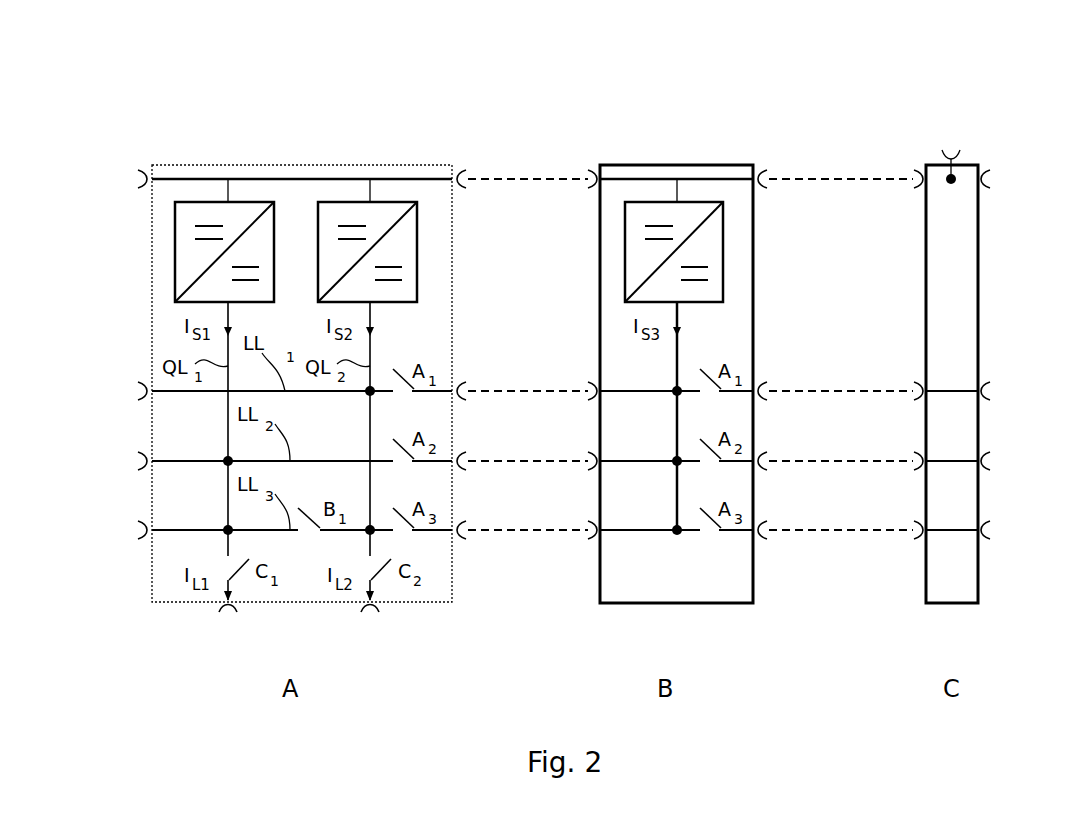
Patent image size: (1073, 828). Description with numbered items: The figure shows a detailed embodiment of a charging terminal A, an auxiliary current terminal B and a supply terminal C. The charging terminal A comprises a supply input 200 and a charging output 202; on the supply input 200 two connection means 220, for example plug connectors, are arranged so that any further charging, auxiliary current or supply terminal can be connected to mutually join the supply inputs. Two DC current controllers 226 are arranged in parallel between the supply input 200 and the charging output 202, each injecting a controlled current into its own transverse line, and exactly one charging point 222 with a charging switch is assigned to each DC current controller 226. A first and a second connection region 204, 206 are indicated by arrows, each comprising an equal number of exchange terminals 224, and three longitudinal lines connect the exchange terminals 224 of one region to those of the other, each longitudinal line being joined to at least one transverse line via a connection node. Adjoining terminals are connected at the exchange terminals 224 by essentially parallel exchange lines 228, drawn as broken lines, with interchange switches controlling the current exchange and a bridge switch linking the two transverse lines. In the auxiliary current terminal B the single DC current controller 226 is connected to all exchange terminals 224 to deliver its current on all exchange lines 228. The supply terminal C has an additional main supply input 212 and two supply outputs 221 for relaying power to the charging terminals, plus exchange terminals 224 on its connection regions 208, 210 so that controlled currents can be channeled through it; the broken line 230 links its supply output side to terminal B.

The supply input 200 is at (318, 148).
The charging output 202 is at (128, 595).
The first connection region 204 is at (122, 372).
The second connection region 206 is at (472, 355).
The connection region 208 is at (910, 355).
The connection region 210 is at (990, 335).
The main supply input 212 is at (950, 150).
The connection means 220 is at (138, 179).
The supply output 221 is at (916, 176).
The charging point 222 is at (232, 614).
The exchange terminal 224 is at (138, 388).
The DC current controller 226 is at (182, 243).
The exchange line 228 is at (822, 390).
The busbar coupling line 230 is at (860, 182).